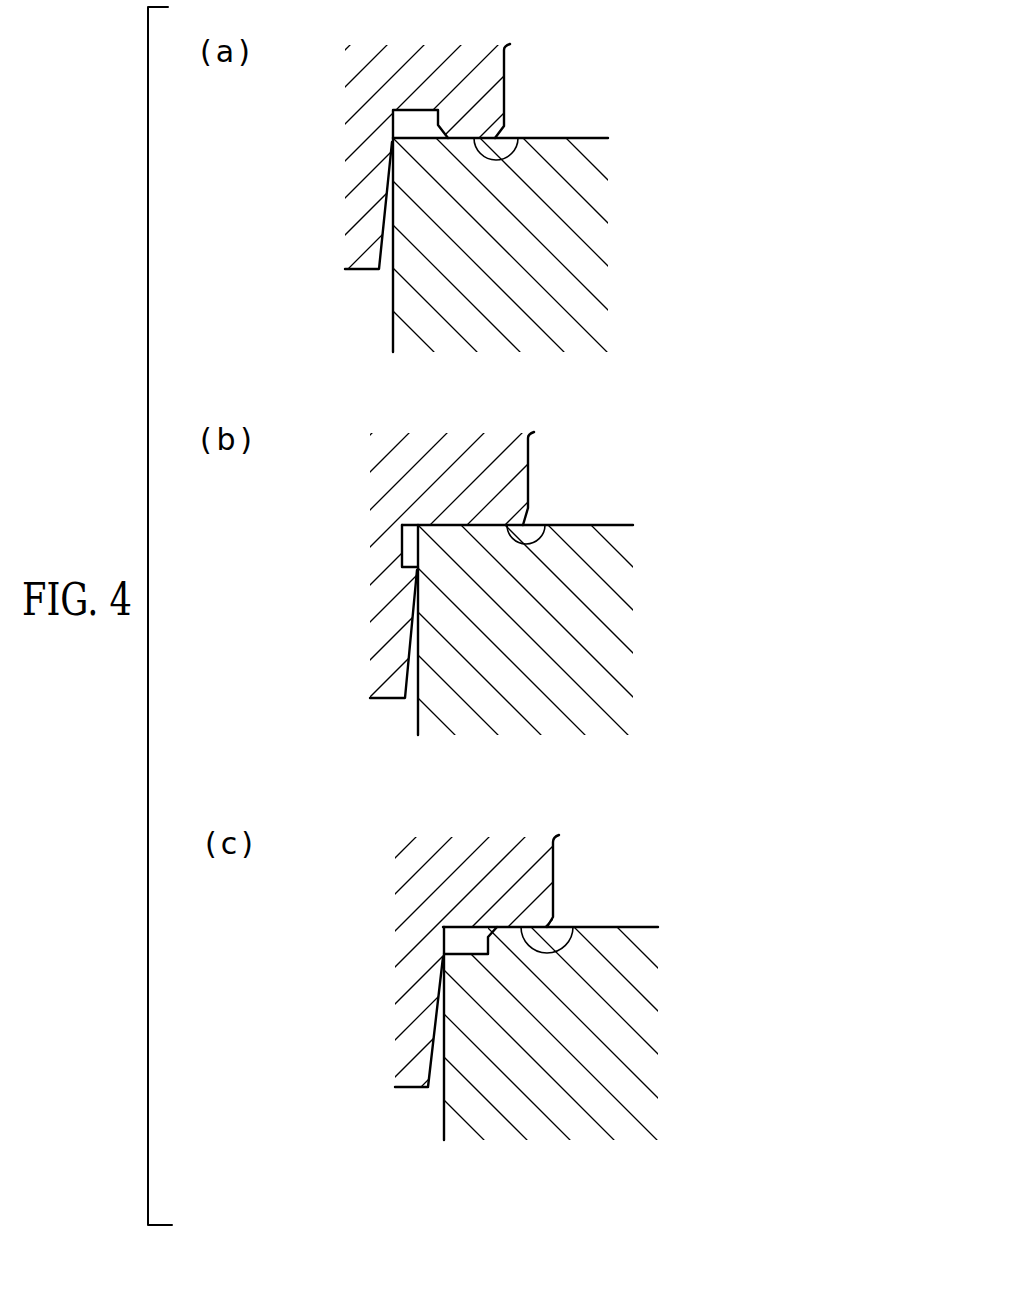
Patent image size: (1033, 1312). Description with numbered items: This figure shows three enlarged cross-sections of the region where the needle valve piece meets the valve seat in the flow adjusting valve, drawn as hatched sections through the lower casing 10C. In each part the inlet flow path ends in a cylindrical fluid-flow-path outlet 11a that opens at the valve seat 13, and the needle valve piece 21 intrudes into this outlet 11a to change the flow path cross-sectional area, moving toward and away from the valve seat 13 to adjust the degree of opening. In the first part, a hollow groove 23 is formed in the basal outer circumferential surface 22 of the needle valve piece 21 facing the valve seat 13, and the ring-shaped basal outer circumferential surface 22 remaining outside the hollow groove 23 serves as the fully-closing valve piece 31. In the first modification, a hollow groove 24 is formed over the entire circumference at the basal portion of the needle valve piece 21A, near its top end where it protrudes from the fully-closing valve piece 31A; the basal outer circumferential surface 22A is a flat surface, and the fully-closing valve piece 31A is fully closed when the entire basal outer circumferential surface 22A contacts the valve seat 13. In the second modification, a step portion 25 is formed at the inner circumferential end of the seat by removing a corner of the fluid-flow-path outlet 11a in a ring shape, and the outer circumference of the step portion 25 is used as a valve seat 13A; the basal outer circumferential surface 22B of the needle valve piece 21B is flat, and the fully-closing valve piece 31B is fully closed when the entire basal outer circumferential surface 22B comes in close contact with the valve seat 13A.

The lower casing 10C is at (607, 266).
The fluid-flow-path outlet 11a is at (380, 287).
The valve seat 13 is at (593, 137).
The valve seat 13A is at (647, 927).
The needle valve piece 21 is at (362, 272).
The needle valve piece 21A is at (382, 705).
The needle valve piece 21B is at (407, 1088).
The basal outer circumferential surface 22 is at (533, 102).
The basal outer circumferential surface 22A is at (575, 488).
The basal outer circumferential surface 22B is at (597, 894).
The hollow groove 23 is at (408, 127).
The hollow groove 24 is at (408, 548).
The step portion 25 is at (458, 942).
The fully-closing valve piece 31 is at (518, 138).
The fully-closing valve piece 31A is at (547, 525).
The fully-closing valve piece 31B is at (573, 927).